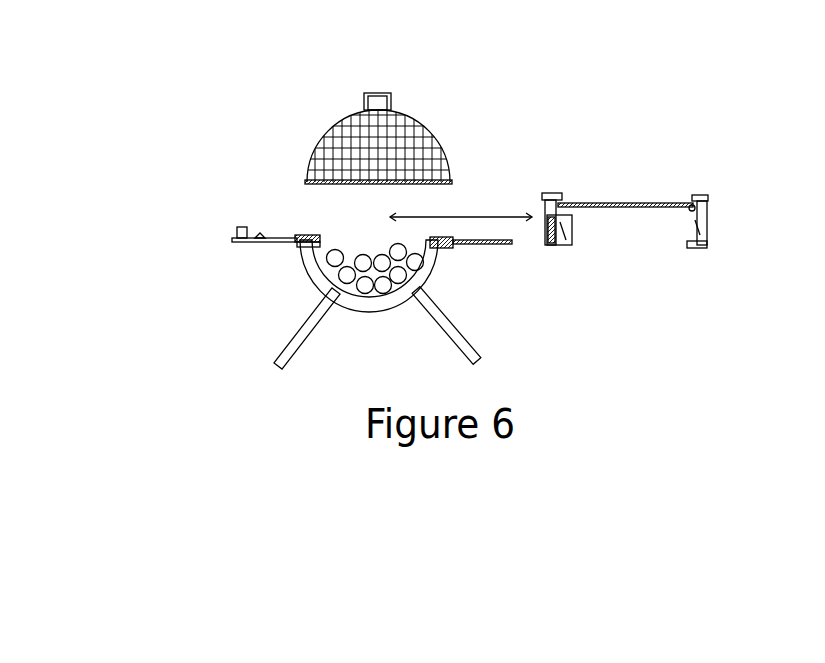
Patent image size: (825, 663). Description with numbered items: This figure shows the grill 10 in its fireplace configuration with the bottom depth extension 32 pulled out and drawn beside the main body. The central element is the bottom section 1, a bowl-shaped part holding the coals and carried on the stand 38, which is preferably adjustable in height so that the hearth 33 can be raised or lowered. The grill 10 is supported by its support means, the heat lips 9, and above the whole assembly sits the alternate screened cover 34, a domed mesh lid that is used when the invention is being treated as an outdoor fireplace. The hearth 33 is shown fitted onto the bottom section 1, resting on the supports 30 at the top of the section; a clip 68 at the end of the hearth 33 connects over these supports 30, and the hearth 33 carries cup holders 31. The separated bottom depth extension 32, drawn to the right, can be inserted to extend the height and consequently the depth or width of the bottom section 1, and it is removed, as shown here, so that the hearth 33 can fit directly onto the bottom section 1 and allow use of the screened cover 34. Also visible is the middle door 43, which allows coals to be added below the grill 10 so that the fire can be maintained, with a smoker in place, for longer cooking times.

The bottom section 1 is at (443, 283).
The heat lips 9 is at (646, 218).
The grill 10 is at (623, 207).
The supports 30 is at (323, 243).
The cup holders 31 is at (237, 226).
The bottom depth extension 32 is at (703, 248).
The hearth 33 is at (250, 243).
The screened cover 34 is at (446, 154).
The stand 38 is at (480, 350).
The middle door 43 is at (577, 237).
The clip 68 is at (328, 244).